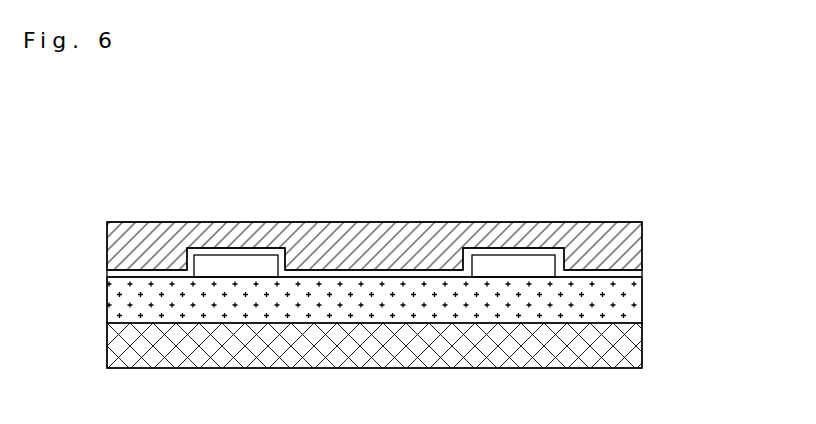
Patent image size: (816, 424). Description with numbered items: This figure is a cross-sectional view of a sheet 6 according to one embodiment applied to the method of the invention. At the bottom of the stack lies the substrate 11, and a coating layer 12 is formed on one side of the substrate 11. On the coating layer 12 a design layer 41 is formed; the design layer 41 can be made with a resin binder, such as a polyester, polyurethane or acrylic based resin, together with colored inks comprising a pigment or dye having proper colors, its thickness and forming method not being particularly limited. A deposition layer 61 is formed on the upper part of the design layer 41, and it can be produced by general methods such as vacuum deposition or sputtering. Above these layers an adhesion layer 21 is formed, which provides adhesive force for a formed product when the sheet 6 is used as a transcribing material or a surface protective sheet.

The sheet 6 is at (410, 172).
The substrate 11 is at (643, 353).
The coating layer 12 is at (643, 297).
The adhesion layer 21 is at (643, 242).
The design layer 41 is at (523, 247).
The deposition layer 61 is at (107, 275).